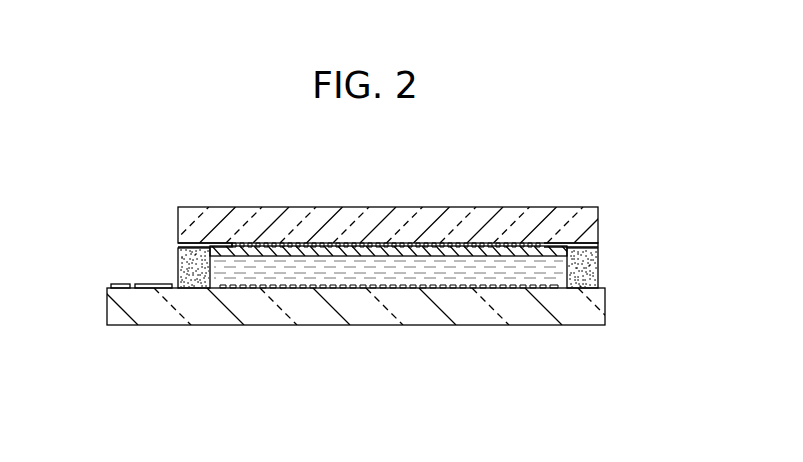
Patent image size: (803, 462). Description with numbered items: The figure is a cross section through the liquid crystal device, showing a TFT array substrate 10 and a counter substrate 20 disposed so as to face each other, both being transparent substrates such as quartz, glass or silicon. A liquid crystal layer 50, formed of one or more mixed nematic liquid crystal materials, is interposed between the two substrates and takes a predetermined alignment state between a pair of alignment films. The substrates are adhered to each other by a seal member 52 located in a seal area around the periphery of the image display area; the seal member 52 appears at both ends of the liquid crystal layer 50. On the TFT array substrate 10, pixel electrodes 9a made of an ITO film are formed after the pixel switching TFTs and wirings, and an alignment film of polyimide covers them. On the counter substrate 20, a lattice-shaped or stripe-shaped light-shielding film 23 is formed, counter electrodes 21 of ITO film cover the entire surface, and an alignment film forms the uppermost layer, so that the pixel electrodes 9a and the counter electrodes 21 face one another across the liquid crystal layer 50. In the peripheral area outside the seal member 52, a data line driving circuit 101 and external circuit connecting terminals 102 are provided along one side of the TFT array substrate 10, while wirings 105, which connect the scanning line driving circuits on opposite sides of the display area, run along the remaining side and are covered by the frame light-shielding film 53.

The TFT array substrate 10 is at (412, 318).
The counter substrate 20 is at (312, 218).
The counter electrode 21 is at (380, 243).
The light-shielding film 23 is at (500, 250).
The liquid crystal layer 50 is at (340, 270).
The seal member 52 is at (184, 266).
The frame light-shielding film 53 is at (222, 243).
The pixel electrode 9a is at (257, 288).
The data line driving circuit 101 is at (157, 287).
The external circuit connecting terminal 102 is at (120, 285).
The wiring 105 is at (550, 290).